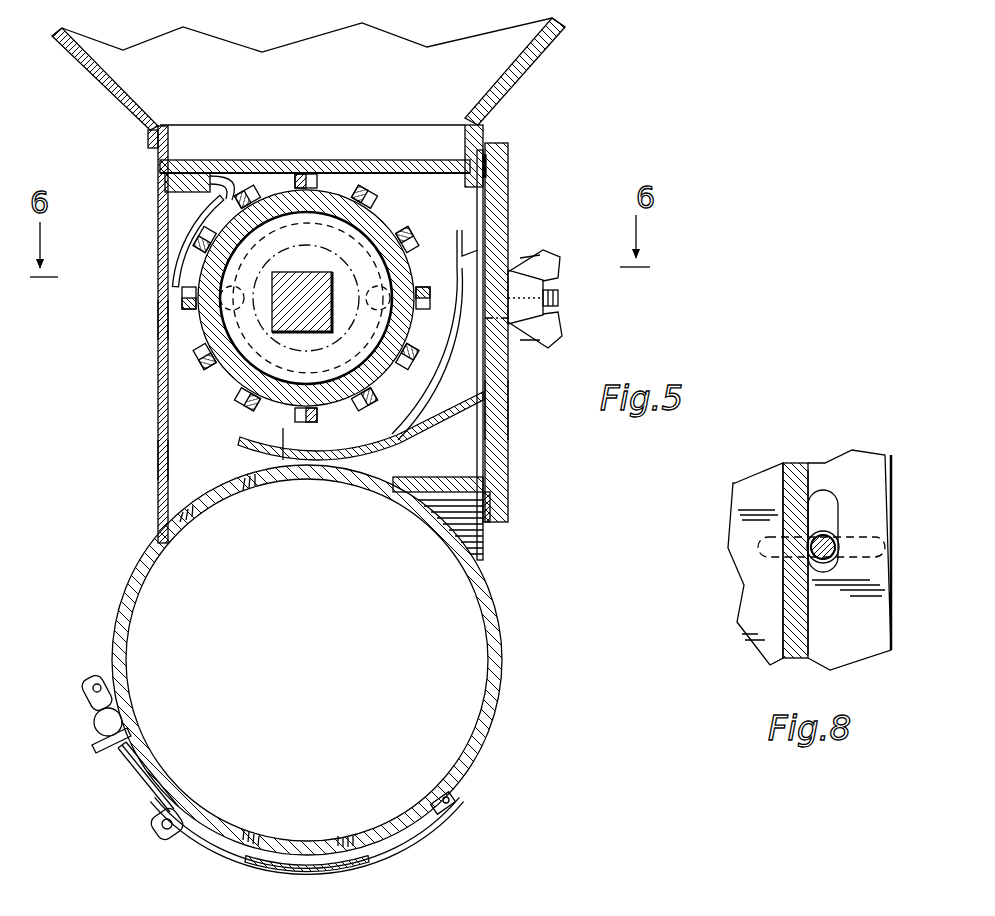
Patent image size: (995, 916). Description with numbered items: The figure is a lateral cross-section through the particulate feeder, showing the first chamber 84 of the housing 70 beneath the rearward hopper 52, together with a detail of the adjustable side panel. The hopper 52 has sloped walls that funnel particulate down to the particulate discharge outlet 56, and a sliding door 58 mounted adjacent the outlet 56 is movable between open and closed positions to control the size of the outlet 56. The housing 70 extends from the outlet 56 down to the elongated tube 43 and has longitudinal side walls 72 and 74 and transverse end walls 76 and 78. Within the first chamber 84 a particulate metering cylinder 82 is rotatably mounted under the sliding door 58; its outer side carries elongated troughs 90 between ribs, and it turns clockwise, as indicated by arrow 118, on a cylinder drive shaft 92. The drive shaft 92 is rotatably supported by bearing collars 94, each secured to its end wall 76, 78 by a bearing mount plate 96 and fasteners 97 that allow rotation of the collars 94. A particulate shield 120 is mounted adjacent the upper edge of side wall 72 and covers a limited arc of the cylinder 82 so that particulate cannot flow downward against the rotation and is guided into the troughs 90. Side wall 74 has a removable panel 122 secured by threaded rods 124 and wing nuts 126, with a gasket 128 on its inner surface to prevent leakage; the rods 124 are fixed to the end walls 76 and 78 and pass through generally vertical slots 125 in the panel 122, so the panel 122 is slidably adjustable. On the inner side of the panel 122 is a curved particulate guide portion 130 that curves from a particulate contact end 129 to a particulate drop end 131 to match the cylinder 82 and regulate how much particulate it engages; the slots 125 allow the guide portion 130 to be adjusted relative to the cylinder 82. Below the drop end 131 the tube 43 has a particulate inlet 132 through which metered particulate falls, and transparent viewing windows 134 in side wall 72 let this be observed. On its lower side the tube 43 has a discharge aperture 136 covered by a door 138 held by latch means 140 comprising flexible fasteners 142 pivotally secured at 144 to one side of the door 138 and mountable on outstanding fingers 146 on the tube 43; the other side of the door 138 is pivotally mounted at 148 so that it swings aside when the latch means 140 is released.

In FIG. 5, the elongated tube 43 is at (498, 662).
In FIG. 5, the rearward hopper 52 is at (212, 66).
In FIG. 5, the particulate discharge outlet 56 is at (336, 118).
In FIG. 5, the sliding door 58 is at (393, 172).
In FIG. 5, the housing 70 is at (154, 250).
In FIG. 5, the longitudinal side wall 72 is at (158, 322).
In FIG. 5, the longitudinal side wall 74 is at (512, 195).
In FIG. 8, the longitudinal side wall 74 is at (740, 640).
In FIG. 8, the transverse end wall 76 is at (806, 631).
In FIG. 5, the transverse end wall 78 is at (463, 196).
In FIG. 5, the particulate metering cylinder 82 is at (230, 388).
In FIG. 5, the first chamber 84 is at (283, 430).
In FIG. 5, the elongated troughs 90 is at (408, 264).
In FIG. 5, the cylinder drive shaft 92 is at (299, 270).
In FIG. 5, the bearing collars 94 is at (298, 343).
In FIG. 5, the bearing mount plate 96 is at (288, 345).
In FIG. 5, the fasteners 97 is at (372, 286).
In FIG. 5, the arrow 118 is at (380, 184).
In FIG. 5, the particulate shield 120 is at (237, 184).
In FIG. 5, the removable panel 122 is at (508, 410).
In FIG. 8, the removable panel 122 is at (770, 606).
In FIG. 5, the threaded rods 124 is at (559, 297).
In FIG. 8, the threaded rods 124 is at (828, 538).
In FIG. 5, the vertical slots 125 is at (505, 268).
In FIG. 8, the vertical slots 125 is at (826, 500).
In FIG. 5, the wing nuts 126 is at (553, 323).
In FIG. 8, the wing nuts 126 is at (886, 519).
In FIG. 5, the gasket 128 is at (488, 162).
In FIG. 5, the particulate contact end 129 is at (458, 233).
In FIG. 5, the curved particulate guide portion 130 is at (378, 434).
In FIG. 5, the particulate drop end 131 is at (234, 439).
In FIG. 5, the particulate inlet 132 is at (224, 490).
In FIG. 5, the transparent viewing windows 134 is at (158, 462).
In FIG. 5, the discharge aperture 136 is at (302, 840).
In FIG. 5, the door 138 is at (340, 858).
In FIG. 5, the latch means 140 is at (116, 762).
In FIG. 5, the flexible fasteners 142 is at (146, 796).
In FIG. 5, the pivot 144 is at (168, 840).
In FIG. 5, the outstanding fingers 146 is at (92, 748).
In FIG. 5, the pivot mounting 148 is at (452, 804).